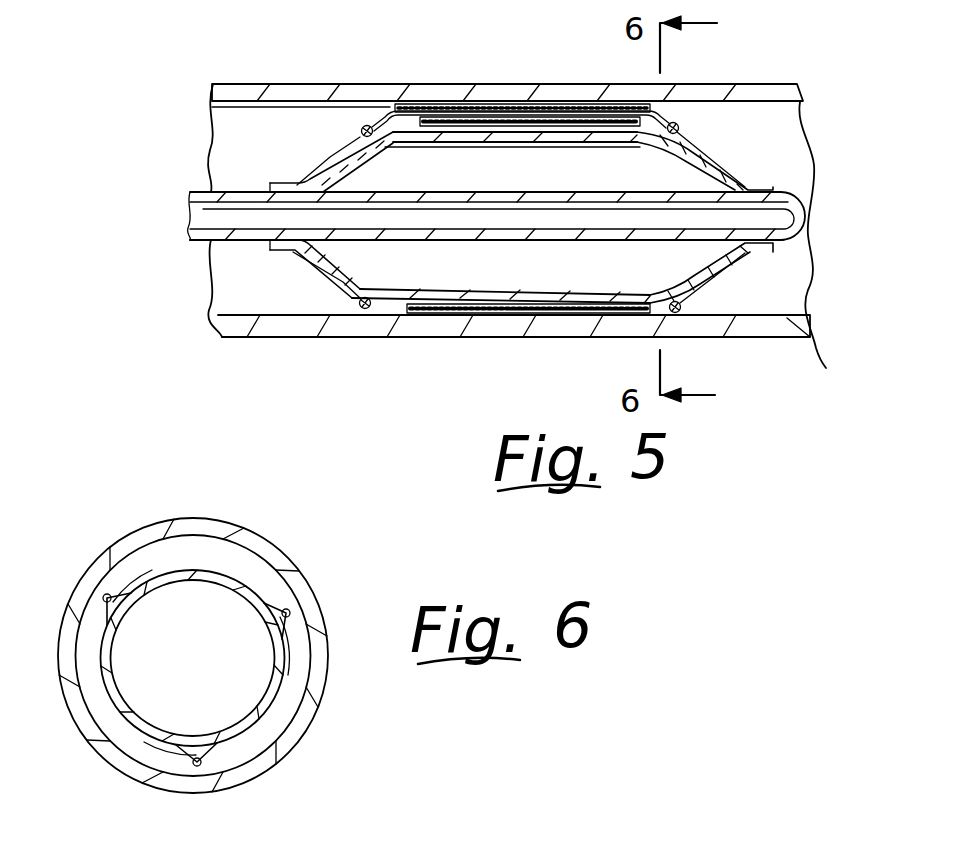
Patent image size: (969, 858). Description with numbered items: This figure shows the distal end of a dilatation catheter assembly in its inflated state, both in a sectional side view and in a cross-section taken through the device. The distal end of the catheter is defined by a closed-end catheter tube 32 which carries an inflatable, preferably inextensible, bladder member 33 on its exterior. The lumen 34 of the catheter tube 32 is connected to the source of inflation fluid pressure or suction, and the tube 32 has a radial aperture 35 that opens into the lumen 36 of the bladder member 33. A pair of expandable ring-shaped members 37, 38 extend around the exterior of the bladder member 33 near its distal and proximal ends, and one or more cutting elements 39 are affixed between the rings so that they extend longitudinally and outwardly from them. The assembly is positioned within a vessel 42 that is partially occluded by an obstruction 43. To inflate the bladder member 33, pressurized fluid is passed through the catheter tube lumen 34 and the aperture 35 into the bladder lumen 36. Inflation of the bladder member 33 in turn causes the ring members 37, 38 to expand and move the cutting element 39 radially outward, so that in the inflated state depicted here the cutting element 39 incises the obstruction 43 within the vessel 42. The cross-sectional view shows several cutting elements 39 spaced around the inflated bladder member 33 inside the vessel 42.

In FIG. 5, the catheter tube 32 is at (536, 239).
In FIG. 5, the bladder member 33 is at (713, 153).
In FIG. 6, the bladder member 33 is at (280, 707).
In FIG. 5, the lumen 34 is at (203, 217).
In FIG. 5, the radial aperture 35 is at (517, 200).
In FIG. 5, the lumen 36 is at (363, 130).
In FIG. 6, the lumen 36 is at (227, 613).
In FIG. 5, the ring-shaped member 37 is at (673, 147).
In FIG. 5, the ring-shaped member 38 is at (357, 168).
In FIG. 5, the cutting element 39 is at (390, 117).
In FIG. 6, the cutting element 39 is at (102, 592).
In FIG. 5, the vessel 42 is at (433, 90).
In FIG. 6, the vessel 42 is at (147, 535).
In FIG. 5, the obstruction 43 is at (527, 120).
In FIG. 6, the obstruction 43 is at (283, 584).